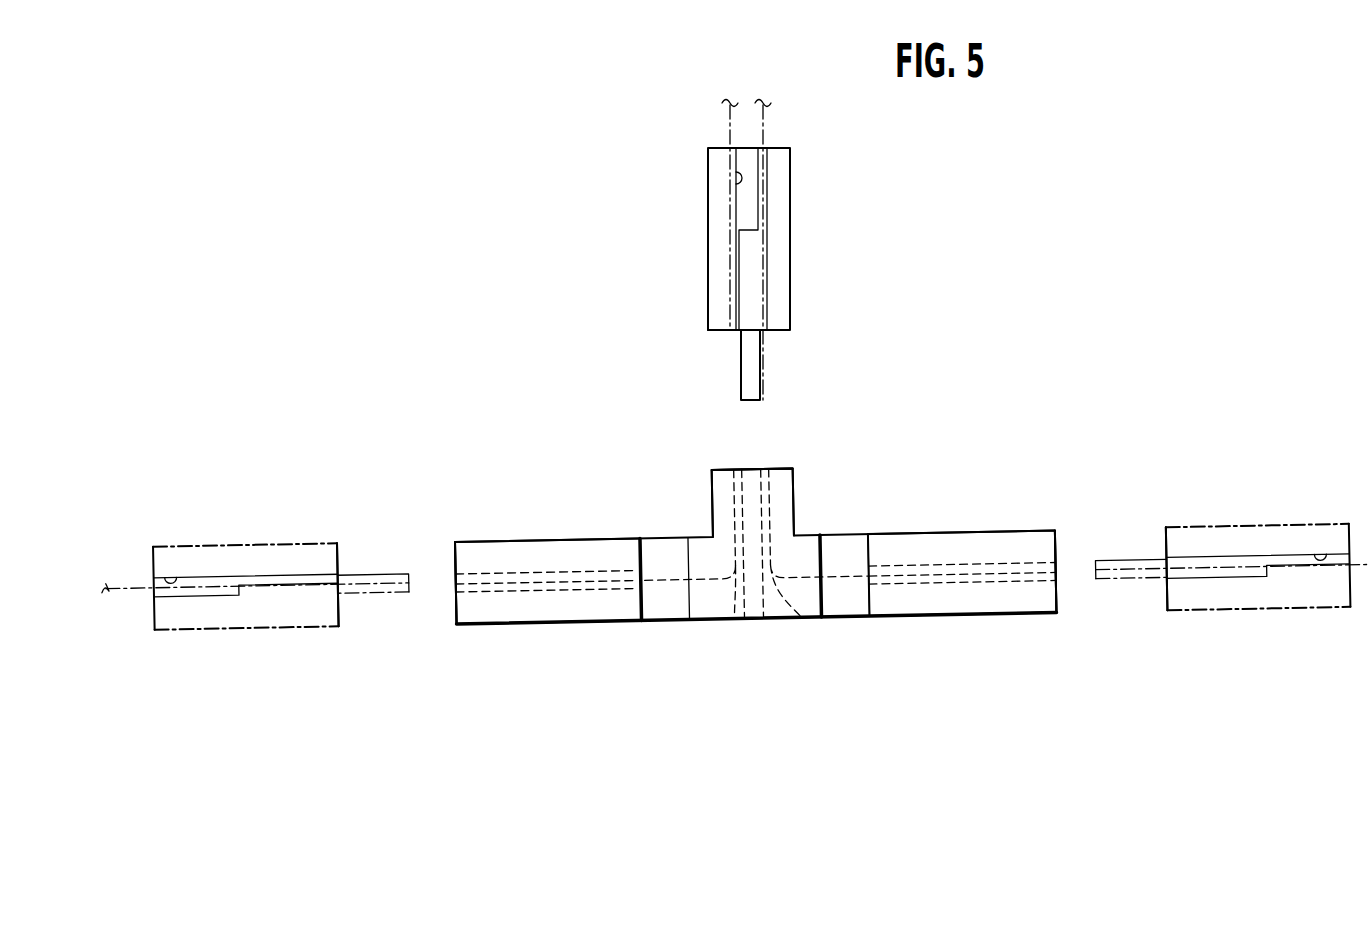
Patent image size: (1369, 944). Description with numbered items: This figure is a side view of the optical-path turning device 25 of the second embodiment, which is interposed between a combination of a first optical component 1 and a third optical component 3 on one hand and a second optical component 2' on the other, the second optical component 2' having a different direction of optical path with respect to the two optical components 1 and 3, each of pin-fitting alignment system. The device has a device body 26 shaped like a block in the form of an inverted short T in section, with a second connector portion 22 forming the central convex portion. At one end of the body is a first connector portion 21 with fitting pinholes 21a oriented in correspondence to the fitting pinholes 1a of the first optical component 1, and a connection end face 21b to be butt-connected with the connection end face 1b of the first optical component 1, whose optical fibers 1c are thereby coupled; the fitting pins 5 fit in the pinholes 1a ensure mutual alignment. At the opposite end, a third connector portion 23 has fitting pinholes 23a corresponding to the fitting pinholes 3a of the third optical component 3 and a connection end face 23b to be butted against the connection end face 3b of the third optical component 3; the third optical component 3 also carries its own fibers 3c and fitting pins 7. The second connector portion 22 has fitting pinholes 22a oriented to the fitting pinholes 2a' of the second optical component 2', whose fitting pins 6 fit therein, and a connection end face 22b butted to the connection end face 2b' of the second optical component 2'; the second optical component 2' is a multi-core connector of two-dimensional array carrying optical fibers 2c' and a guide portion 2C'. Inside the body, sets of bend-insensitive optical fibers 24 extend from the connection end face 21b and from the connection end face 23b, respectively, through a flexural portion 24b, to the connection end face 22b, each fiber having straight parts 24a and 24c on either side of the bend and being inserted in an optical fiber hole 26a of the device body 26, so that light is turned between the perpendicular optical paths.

The first optical component 1 is at (228, 545).
The fitting pinholes 1a is at (175, 578).
The connection end face 1b is at (342, 548).
The optical fibers 1c is at (283, 578).
The fitting pins 5 is at (380, 595).
The second optical component 2' is at (701, 215).
The fitting pinholes 2a' is at (690, 184).
The connection end face 2b' is at (713, 368).
The fiber holding channel of second connector 2c' is at (685, 239).
The guide portion of second connector 2C' is at (817, 239).
The fitting pins 6 is at (762, 377).
The third optical component 3 is at (1273, 522).
The fitting pinholes 3a is at (1318, 557).
The connection end face 3b is at (1166, 540).
The fiber holding channel of third connector 3c is at (1230, 557).
The third optical fiber 7 is at (1118, 585).
The first connector portion 21 is at (492, 540).
The fitting pinholes 21a is at (572, 577).
The connection end face 21b is at (445, 543).
The second connector portion 22 is at (713, 485).
The fitting pinholes 22a is at (760, 598).
The connection end face 22b is at (780, 468).
The third connector portion 23 is at (920, 532).
The fitting pinholes 23a is at (1018, 567).
The connection end face 23b is at (1058, 533).
The bend-insensitive optical fibers 24 is at (582, 580).
The straight part 24a is at (485, 585).
The flexural portion 24b is at (734, 600).
The straight part 24c is at (736, 505).
The optical-path turning device 25 is at (909, 411).
The device body 26 is at (707, 604).
The optical fiber hole 26a is at (963, 578).